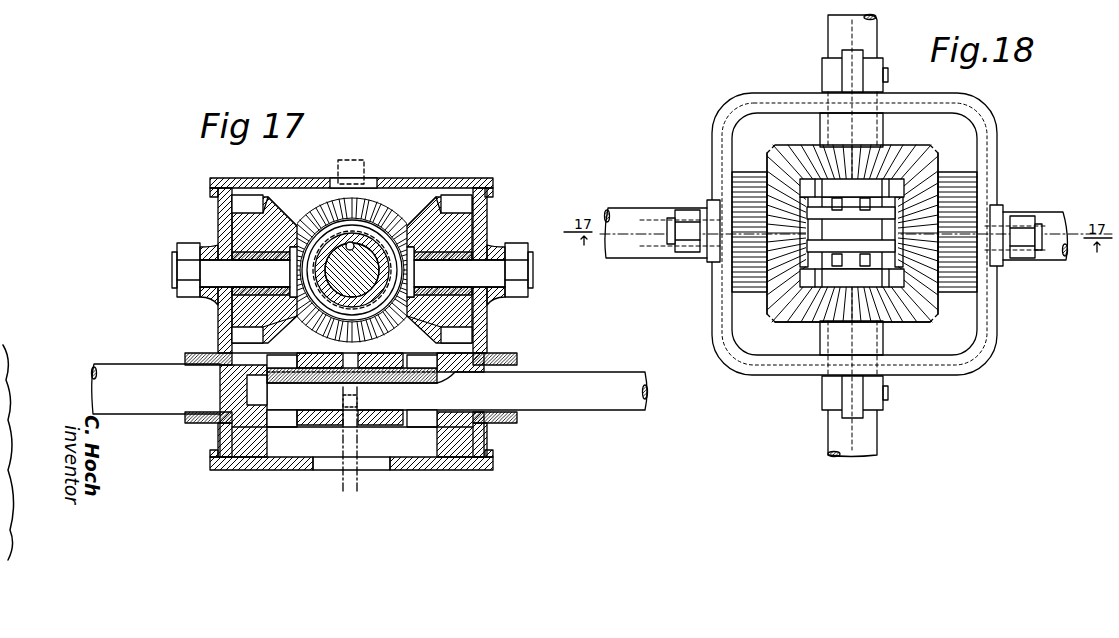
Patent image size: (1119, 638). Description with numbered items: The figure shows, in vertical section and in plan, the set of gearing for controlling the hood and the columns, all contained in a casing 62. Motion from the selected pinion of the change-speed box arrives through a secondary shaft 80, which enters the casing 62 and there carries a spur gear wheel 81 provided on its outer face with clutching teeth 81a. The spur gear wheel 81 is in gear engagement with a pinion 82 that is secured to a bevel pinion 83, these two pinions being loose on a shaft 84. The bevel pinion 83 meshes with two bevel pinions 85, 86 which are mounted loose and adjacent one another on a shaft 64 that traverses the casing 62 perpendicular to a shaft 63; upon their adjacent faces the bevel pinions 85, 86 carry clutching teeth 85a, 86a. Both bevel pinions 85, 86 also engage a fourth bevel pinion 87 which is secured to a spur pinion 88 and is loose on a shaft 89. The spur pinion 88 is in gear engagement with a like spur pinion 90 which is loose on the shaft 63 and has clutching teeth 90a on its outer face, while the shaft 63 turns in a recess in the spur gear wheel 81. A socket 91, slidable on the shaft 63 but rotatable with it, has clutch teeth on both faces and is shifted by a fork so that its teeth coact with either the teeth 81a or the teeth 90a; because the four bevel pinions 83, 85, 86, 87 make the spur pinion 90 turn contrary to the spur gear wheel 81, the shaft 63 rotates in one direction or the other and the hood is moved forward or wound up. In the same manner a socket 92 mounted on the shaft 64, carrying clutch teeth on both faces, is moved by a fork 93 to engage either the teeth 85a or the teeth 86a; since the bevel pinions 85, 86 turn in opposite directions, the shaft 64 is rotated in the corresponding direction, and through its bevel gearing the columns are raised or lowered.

In FIG. 17, the casing 62 is at (220, 318).
In FIG. 17, the shaft 63 is at (578, 380).
In FIG. 18, the shaft 63 is at (1038, 220).
In FIG. 18, the shaft 64 is at (837, 33).
In FIG. 17, the secondary shaft 80 is at (142, 372).
In FIG. 18, the secondary shaft 80 is at (657, 210).
In FIG. 17, the spur gear wheel 81 is at (232, 440).
In FIG. 17, the clutching teeth 81a is at (272, 417).
In FIG. 17, the pinion 82 is at (262, 214).
In FIG. 18, the pinion 82 is at (750, 273).
In FIG. 17, the bevel pinion 83 is at (293, 220).
In FIG. 18, the bevel pinion 83 is at (765, 165).
In FIG. 17, the shaft 84 is at (172, 267).
In FIG. 18, the shaft 84 is at (668, 230).
In FIG. 17, the bevel pinion 85 is at (392, 215).
In FIG. 18, the bevel pinion 85 is at (907, 150).
In FIG. 18, the clutching teeth 85a is at (852, 187).
In FIG. 18, the bevel pinion 86 is at (900, 320).
In FIG. 18, the clutching teeth 86a is at (852, 276).
In FIG. 17, the bevel pinion 87 is at (450, 185).
In FIG. 18, the bevel pinion 87 is at (938, 163).
In FIG. 17, the spur pinion 88 is at (470, 214).
In FIG. 18, the spur pinion 88 is at (955, 270).
In FIG. 17, the shaft 89 is at (533, 272).
In FIG. 18, the shaft 89 is at (1037, 236).
In FIG. 17, the spur pinion 90 is at (478, 438).
In FIG. 17, the clutching teeth 90a is at (415, 418).
In FIG. 17, the socket 91 is at (367, 418).
In FIG. 17, the socket 92 is at (349, 243).
In FIG. 18, the socket 92 is at (851, 233).
In FIG. 17, the fork 93 is at (384, 150).